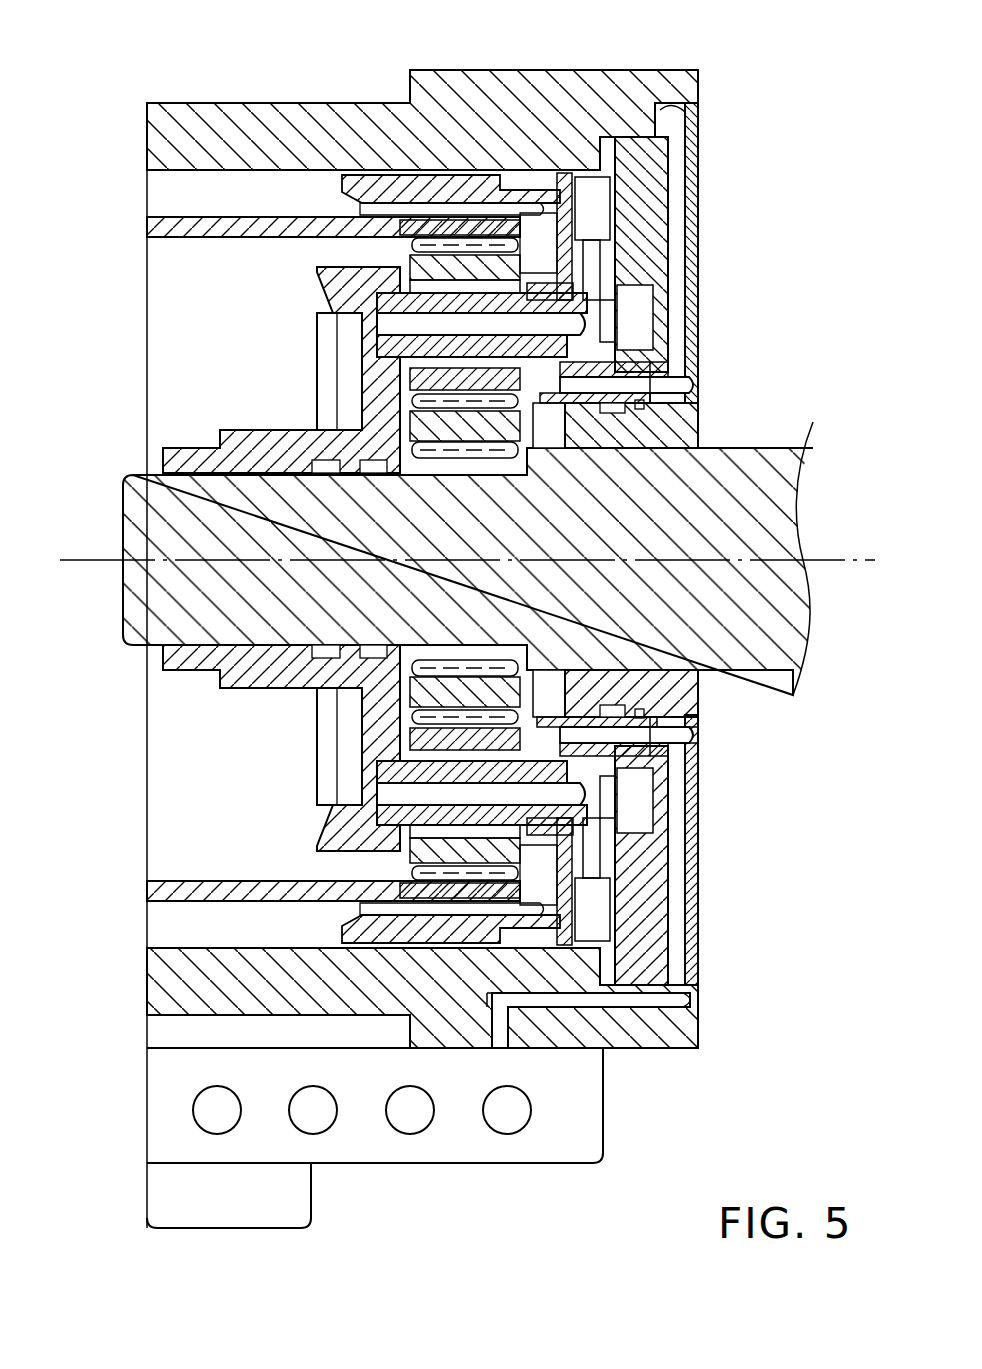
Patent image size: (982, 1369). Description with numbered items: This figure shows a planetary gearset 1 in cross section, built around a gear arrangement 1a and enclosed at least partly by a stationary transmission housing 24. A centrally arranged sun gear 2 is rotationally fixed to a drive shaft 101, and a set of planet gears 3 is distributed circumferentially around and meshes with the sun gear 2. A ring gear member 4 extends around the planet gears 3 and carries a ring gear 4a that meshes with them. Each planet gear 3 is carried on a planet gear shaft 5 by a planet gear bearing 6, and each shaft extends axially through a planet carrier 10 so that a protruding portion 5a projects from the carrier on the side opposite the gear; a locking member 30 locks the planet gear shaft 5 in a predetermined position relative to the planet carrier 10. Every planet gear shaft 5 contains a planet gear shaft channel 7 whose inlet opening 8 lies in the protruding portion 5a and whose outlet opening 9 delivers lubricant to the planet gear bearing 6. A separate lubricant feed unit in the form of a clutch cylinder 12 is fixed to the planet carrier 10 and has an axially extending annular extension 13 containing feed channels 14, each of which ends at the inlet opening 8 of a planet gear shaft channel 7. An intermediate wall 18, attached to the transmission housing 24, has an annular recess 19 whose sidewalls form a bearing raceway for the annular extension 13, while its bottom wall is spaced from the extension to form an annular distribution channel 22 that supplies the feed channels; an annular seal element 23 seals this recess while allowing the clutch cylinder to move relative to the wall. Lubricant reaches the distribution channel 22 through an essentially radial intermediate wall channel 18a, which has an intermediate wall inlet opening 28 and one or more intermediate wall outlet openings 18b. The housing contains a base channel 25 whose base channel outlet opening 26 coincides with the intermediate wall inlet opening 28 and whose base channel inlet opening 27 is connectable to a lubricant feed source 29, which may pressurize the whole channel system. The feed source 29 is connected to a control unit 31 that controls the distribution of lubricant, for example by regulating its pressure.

The planetary gearset 1 is at (786, 54).
The gear arrangement 1a is at (312, 385).
The sun gear 2 is at (355, 415).
The planet gears 3 is at (415, 272).
The ring gear member 4 is at (215, 237).
The ring gear 4a is at (284, 559).
The planet gear shafts 5 is at (395, 345).
The protruding portion 5a is at (311, 559).
The planet gear bearings 6 is at (330, 283).
The planet gear shaft channel 7 is at (405, 327).
The inlet opening 8 is at (600, 342).
The outlet opening 9 is at (456, 292).
The planet carrier 10 is at (330, 400).
The clutch cylinder 12 is at (482, 190).
The annular extension 13 is at (640, 398).
The feed channels 14 is at (617, 383).
The intermediate wall 18 is at (700, 150).
The intermediate wall channel 18a is at (680, 207).
The intermediate wall outlet opening 18b is at (667, 737).
The annular recess 19 is at (645, 377).
The annular distribution channel 22 is at (652, 397).
The annular seal element 23 is at (647, 408).
The stationary transmission housing 24 is at (283, 103).
The base channel 25 is at (502, 1040).
The base channel outlet opening 26 is at (670, 992).
The base channel inlet opening 27 is at (497, 1040).
The intermediate wall inlet opening 28 is at (657, 998).
The lubricant feed source 29 is at (642, 1132).
The locking member 30 is at (578, 290).
The control unit 31 is at (410, 1108).
The drive shaft 101 is at (215, 520).